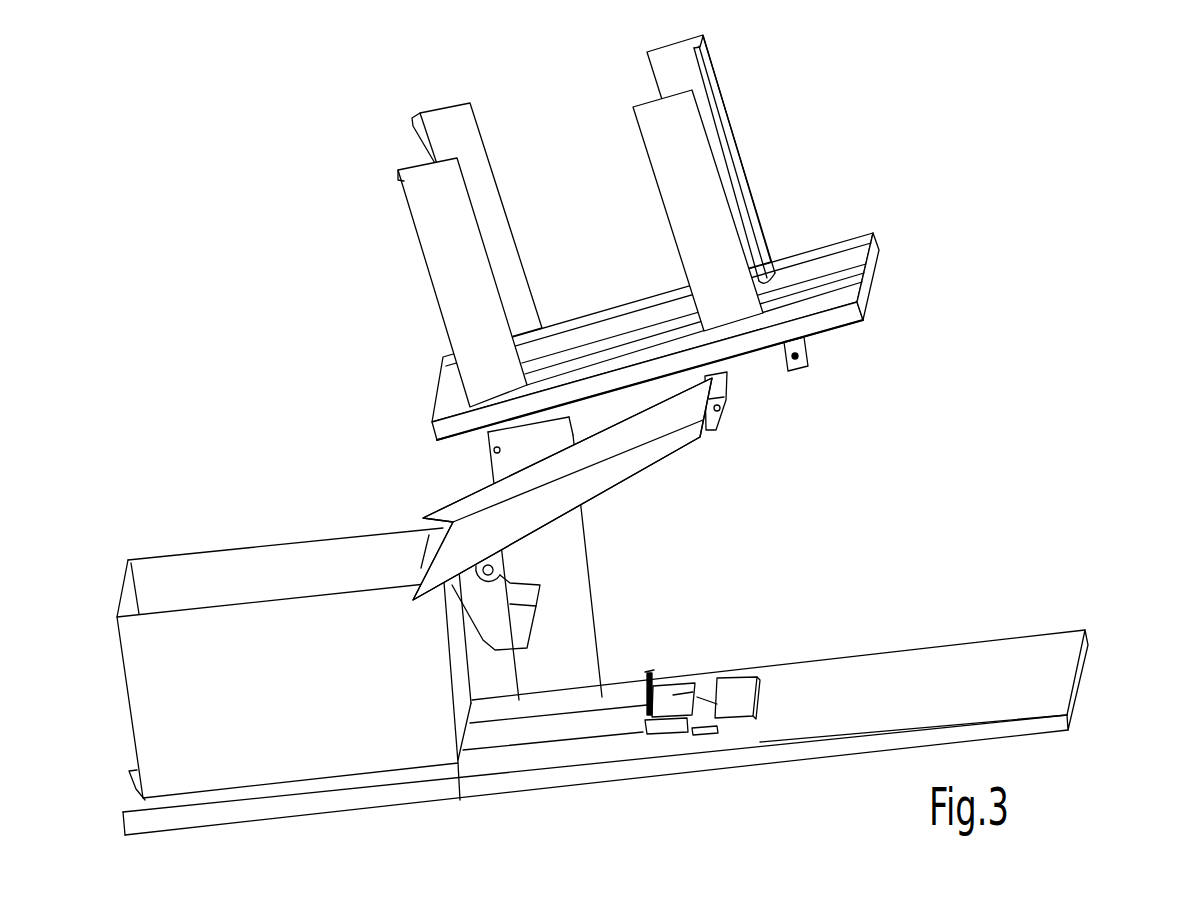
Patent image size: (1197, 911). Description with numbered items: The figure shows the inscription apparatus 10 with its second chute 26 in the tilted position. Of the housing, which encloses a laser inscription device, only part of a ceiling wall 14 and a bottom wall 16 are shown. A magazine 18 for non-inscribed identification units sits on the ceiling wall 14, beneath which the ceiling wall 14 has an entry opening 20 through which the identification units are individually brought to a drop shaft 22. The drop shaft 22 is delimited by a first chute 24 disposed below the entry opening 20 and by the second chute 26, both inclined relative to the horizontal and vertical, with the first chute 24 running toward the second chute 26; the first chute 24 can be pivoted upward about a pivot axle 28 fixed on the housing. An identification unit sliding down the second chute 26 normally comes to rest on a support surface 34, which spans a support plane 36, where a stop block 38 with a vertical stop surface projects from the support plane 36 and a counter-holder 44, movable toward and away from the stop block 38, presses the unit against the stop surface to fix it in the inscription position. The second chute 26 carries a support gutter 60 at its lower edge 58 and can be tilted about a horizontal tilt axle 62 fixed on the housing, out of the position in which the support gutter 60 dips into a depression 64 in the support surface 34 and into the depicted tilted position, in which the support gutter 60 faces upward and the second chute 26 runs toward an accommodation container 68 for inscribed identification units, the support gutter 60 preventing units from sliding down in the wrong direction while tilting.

The inscription apparatus 10 is at (631, 446).
The ceiling wall 14 is at (832, 240).
The bottom wall 16 is at (649, 732).
The magazine 18 is at (700, 168).
The entry opening 20 is at (603, 362).
The drop shaft 22 is at (663, 489).
The first chute 24 is at (772, 373).
The second chute 26 is at (598, 467).
The pivot axle 28 is at (775, 362).
The support surface 34 is at (703, 697).
The support plane 36 is at (945, 702).
The stop block 38 is at (742, 692).
The counter-holder 44 is at (673, 682).
The lower edge 58 is at (707, 433).
The support gutter 60 is at (733, 420).
The tilt axle 62 is at (503, 558).
The depression 64 is at (703, 737).
The accommodation container 68 is at (197, 580).